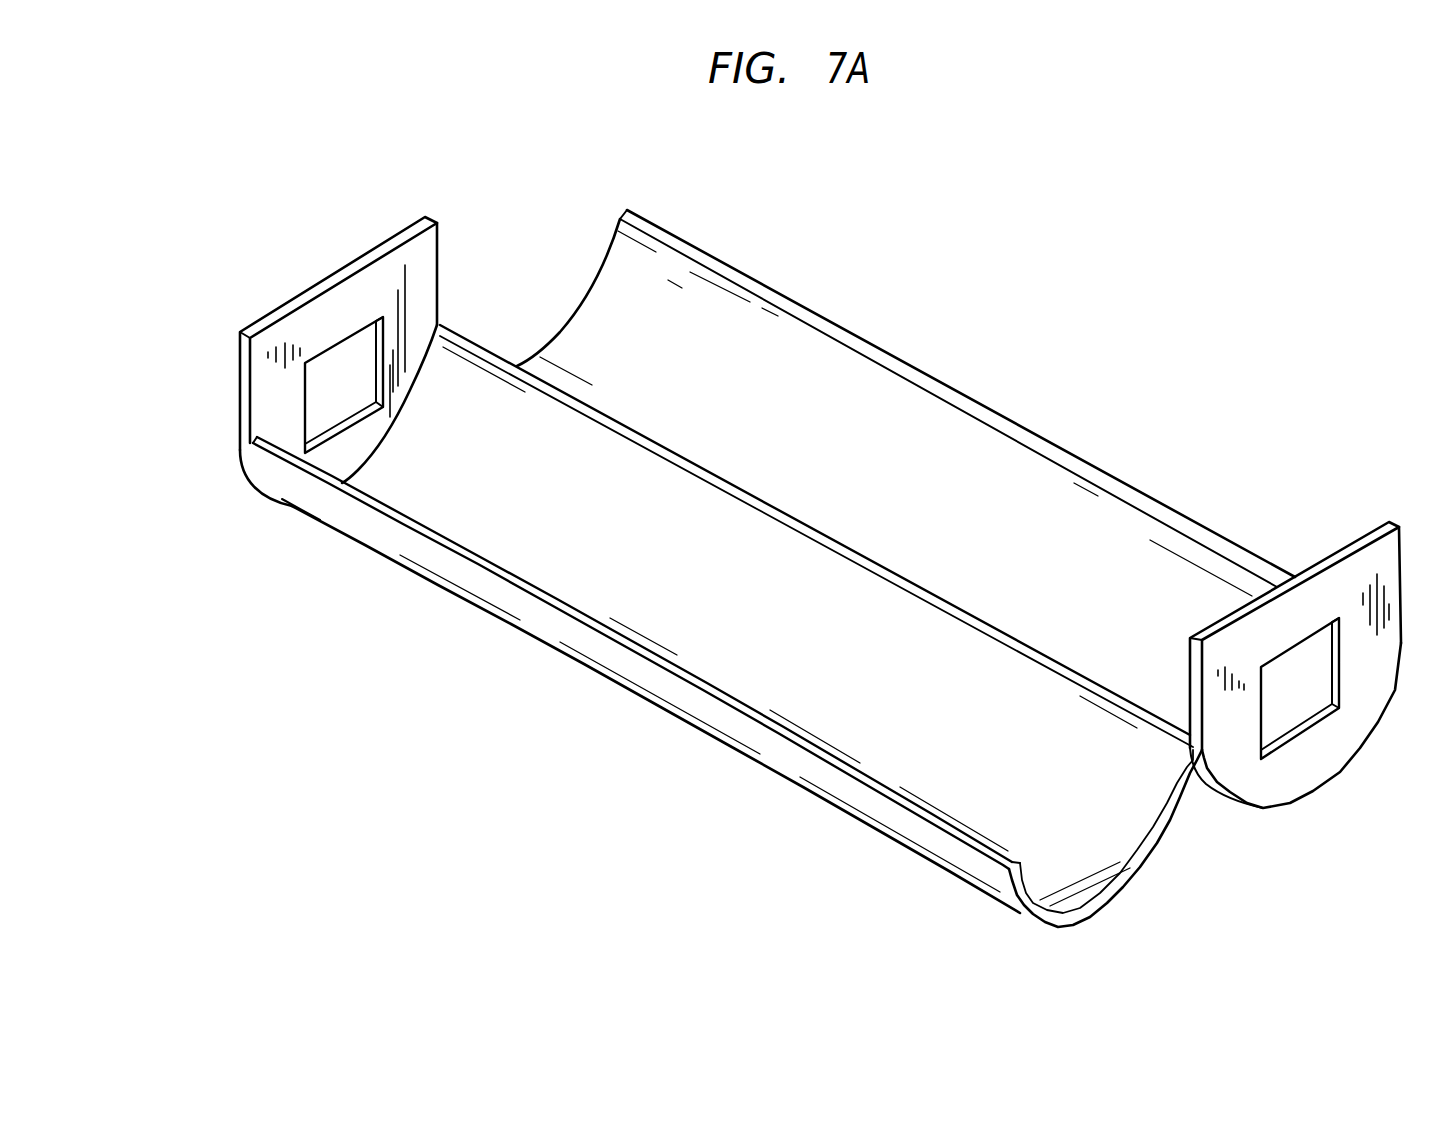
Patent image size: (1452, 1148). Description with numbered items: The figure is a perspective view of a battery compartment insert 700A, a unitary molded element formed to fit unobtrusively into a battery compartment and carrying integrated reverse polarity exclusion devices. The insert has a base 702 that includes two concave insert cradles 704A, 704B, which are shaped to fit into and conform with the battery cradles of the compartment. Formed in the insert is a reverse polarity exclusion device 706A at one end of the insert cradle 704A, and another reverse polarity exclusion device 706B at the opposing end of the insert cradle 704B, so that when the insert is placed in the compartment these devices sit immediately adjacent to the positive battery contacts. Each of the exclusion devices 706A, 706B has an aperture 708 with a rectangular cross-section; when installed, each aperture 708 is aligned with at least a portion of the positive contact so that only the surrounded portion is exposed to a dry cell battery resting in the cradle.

The battery compartment insert 700A is at (1002, 297).
The base 702 is at (800, 763).
The insert cradle 704A is at (1121, 838).
The insert cradle 704B is at (600, 305).
The reverse polarity exclusion device 706A is at (243, 367).
The reverse polarity exclusion device 706B is at (1381, 564).
The aperture 708 is at (328, 370).